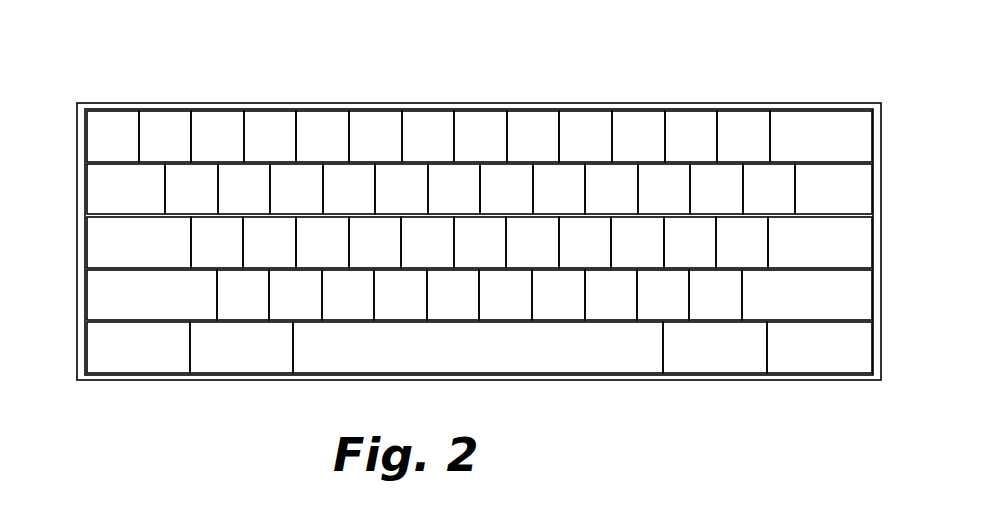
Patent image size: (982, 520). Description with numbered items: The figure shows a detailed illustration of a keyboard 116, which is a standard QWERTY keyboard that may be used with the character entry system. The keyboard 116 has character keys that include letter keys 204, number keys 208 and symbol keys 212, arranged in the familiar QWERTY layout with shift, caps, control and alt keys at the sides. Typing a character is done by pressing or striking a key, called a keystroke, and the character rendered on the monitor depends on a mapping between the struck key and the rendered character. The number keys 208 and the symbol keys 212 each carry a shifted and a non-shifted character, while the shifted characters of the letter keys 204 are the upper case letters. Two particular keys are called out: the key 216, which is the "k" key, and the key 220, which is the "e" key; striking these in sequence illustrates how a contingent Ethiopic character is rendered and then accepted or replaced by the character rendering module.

The keyboard 116 is at (178, 38).
The letter keys 204 is at (627, 173).
The number keys 208 is at (338, 124).
The symbol keys 212 is at (627, 308).
The key 216 is at (592, 226).
The key 220 is at (290, 178).